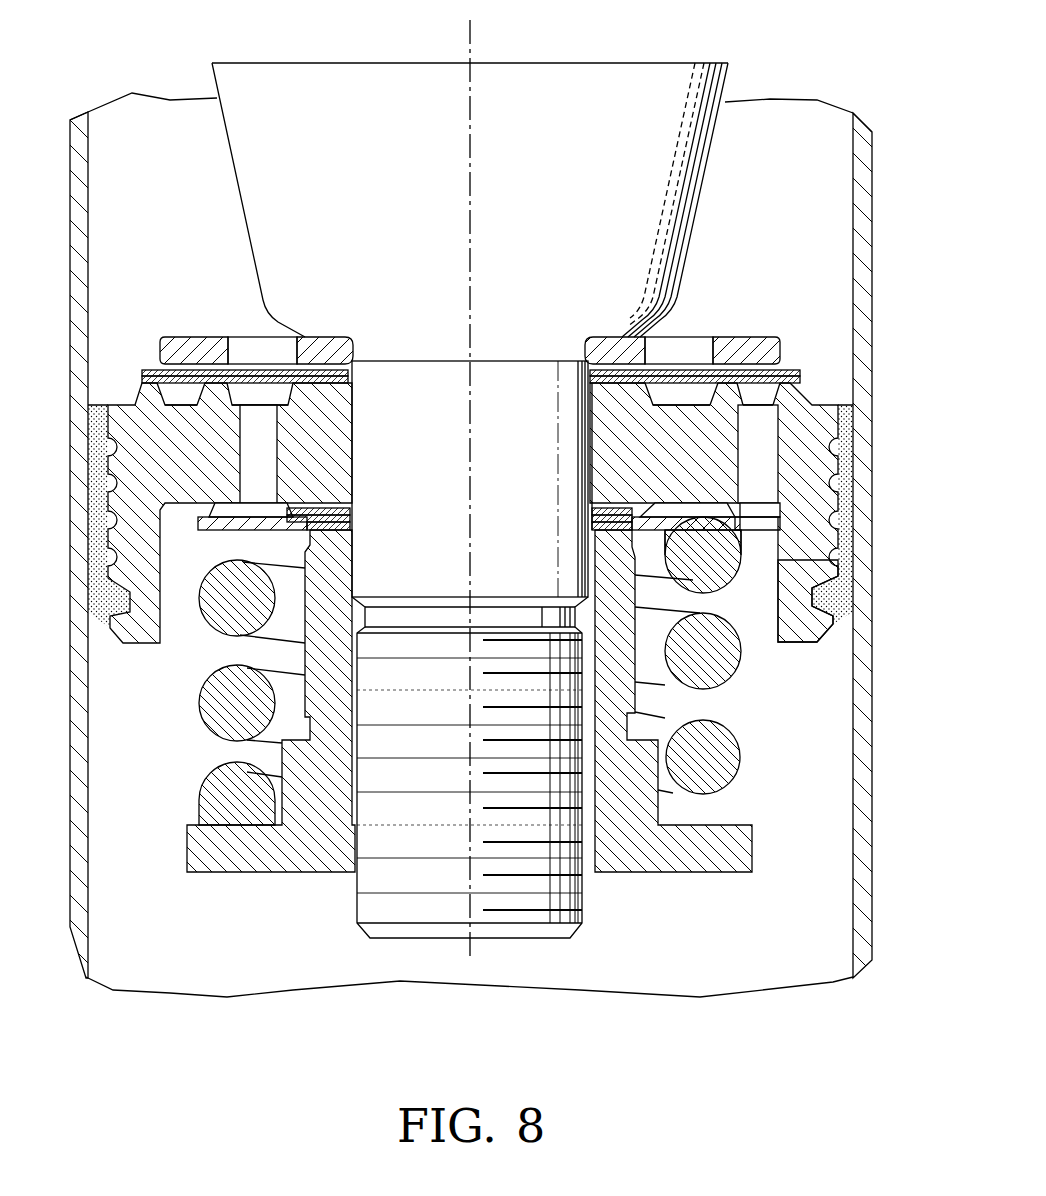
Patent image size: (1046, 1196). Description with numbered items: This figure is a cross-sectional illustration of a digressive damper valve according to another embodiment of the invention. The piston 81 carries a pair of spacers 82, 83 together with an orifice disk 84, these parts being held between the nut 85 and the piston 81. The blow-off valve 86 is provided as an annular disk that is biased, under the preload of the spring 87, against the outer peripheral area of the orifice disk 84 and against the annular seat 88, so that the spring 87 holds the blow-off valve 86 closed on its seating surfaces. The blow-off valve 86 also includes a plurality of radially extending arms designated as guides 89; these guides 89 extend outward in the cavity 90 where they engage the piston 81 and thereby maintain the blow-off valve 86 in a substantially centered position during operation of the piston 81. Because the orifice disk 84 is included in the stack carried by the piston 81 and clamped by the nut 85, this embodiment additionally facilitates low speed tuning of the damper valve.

The piston 81 is at (812, 407).
The spacer 82 is at (592, 528).
The spacer 83 is at (592, 520).
The orifice disk 84 is at (592, 510).
The nut 85 is at (660, 853).
The blow-off valve 86 is at (727, 530).
The spring 87 is at (717, 770).
The annular seat 88 is at (735, 520).
The guides 89 is at (773, 537).
The cavity 90 is at (780, 607).